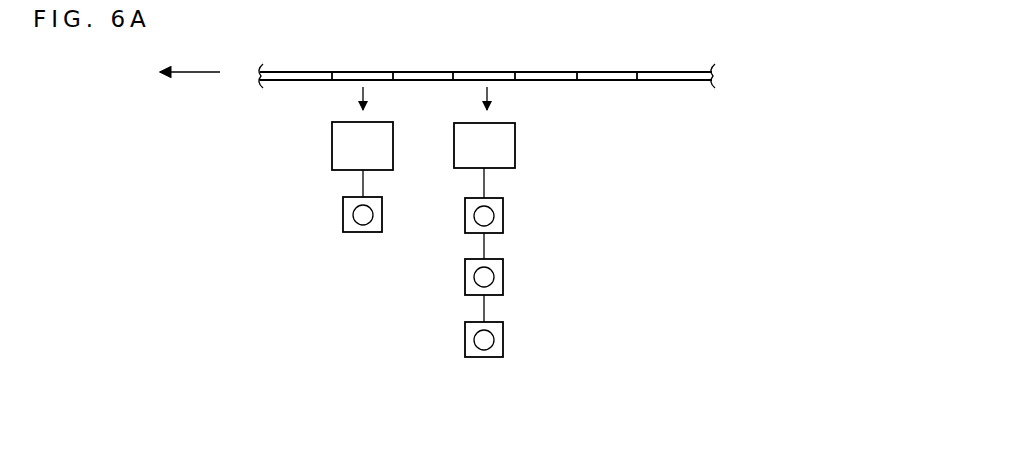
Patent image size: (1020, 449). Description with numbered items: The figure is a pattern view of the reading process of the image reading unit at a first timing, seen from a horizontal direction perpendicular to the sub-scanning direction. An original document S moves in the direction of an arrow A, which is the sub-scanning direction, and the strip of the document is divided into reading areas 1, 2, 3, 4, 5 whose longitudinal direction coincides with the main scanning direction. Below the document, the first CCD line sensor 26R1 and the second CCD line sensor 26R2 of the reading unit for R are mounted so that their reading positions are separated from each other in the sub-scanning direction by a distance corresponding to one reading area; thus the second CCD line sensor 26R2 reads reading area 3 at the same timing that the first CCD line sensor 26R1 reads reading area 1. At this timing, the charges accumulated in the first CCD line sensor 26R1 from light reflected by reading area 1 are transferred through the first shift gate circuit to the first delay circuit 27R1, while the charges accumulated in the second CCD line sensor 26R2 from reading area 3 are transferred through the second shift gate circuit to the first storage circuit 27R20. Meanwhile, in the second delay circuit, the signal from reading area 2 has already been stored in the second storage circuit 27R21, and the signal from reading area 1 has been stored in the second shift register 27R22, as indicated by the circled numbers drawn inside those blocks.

The original document S is at (690, 99).
The arrow A is at (196, 71).
The reading area 1 is at (355, 71).
The reading area 2 is at (415, 71).
The reading area 3 is at (475, 71).
The reading area 4 is at (537, 71).
The reading area 5 is at (600, 71).
The first CCD line sensor 26R1 is at (332, 140).
The second CCD line sensor 26R2 is at (516, 150).
The first delay circuit 27R1 is at (343, 212).
The first storage circuit 27R20 is at (504, 222).
The second storage circuit 27R21 is at (504, 284).
The second shift register 27R22 is at (504, 347).